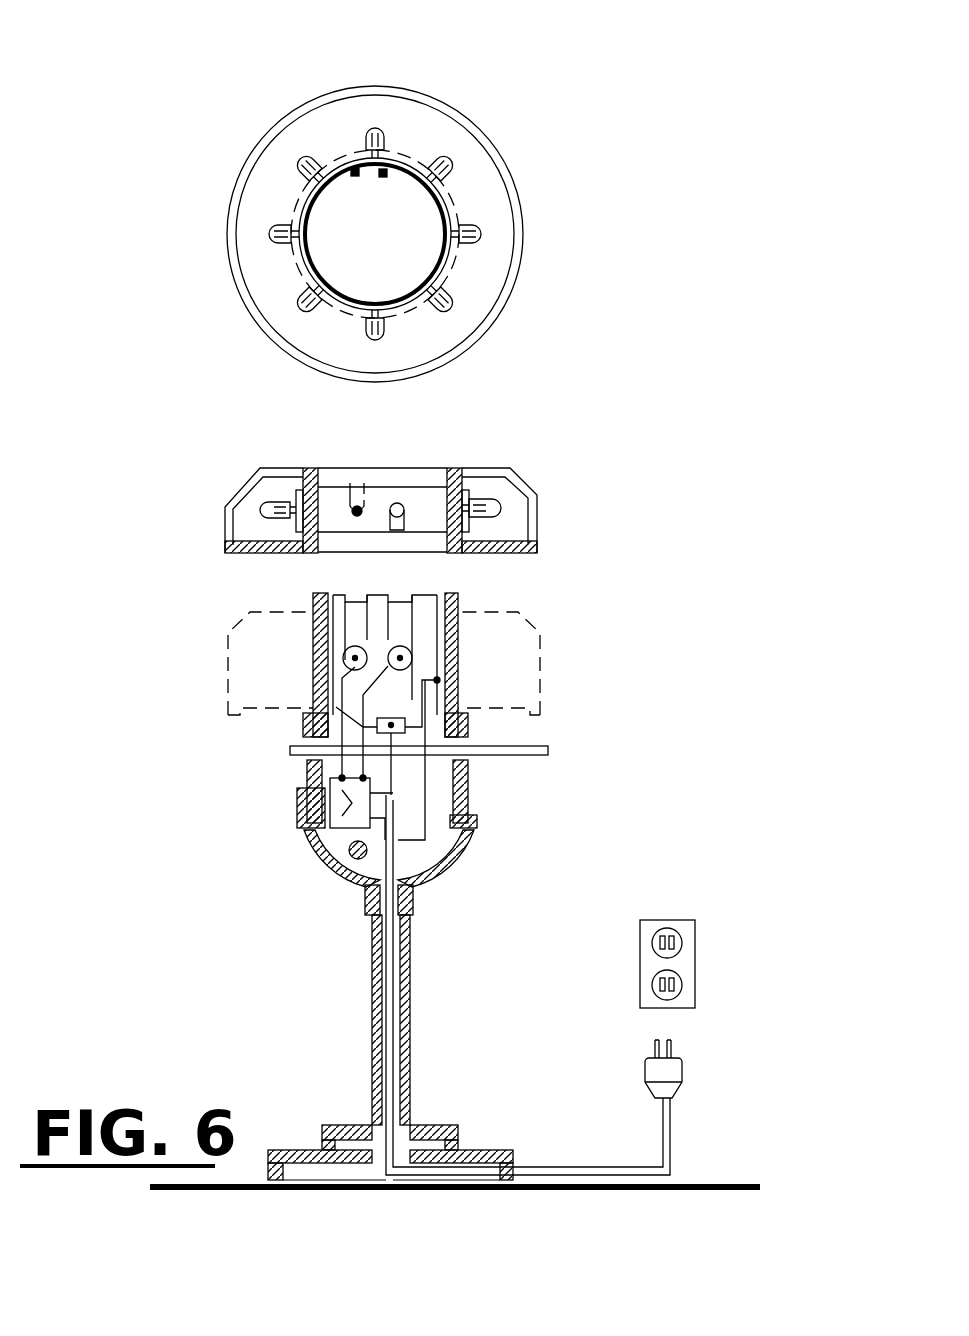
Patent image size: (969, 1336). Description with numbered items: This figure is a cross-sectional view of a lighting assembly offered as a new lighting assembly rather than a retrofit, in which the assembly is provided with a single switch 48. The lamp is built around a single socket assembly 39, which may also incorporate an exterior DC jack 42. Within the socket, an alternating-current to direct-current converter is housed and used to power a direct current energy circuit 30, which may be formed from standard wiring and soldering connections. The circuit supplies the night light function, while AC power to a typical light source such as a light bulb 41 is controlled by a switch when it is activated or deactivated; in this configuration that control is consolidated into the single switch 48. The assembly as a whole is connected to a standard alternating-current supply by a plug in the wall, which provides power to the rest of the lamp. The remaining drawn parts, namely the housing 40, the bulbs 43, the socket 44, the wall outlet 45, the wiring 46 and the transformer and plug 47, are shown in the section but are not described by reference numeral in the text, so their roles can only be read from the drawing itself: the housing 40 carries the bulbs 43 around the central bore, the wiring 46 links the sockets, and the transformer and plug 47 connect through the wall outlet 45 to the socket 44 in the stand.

The direct current energy circuit 30 is at (445, 196).
The single socket assembly 39 is at (412, 1020).
The lamp housing 40 is at (526, 242).
The light bulb 41 is at (408, 655).
The exterior DC jack 42 is at (384, 174).
The light bulbs 43 is at (363, 124).
The socket 44 is at (355, 857).
The wall outlet 45 is at (667, 918).
The wiring 46 is at (402, 690).
The transformer / plug 47 is at (331, 799).
The single switch 48 is at (550, 750).